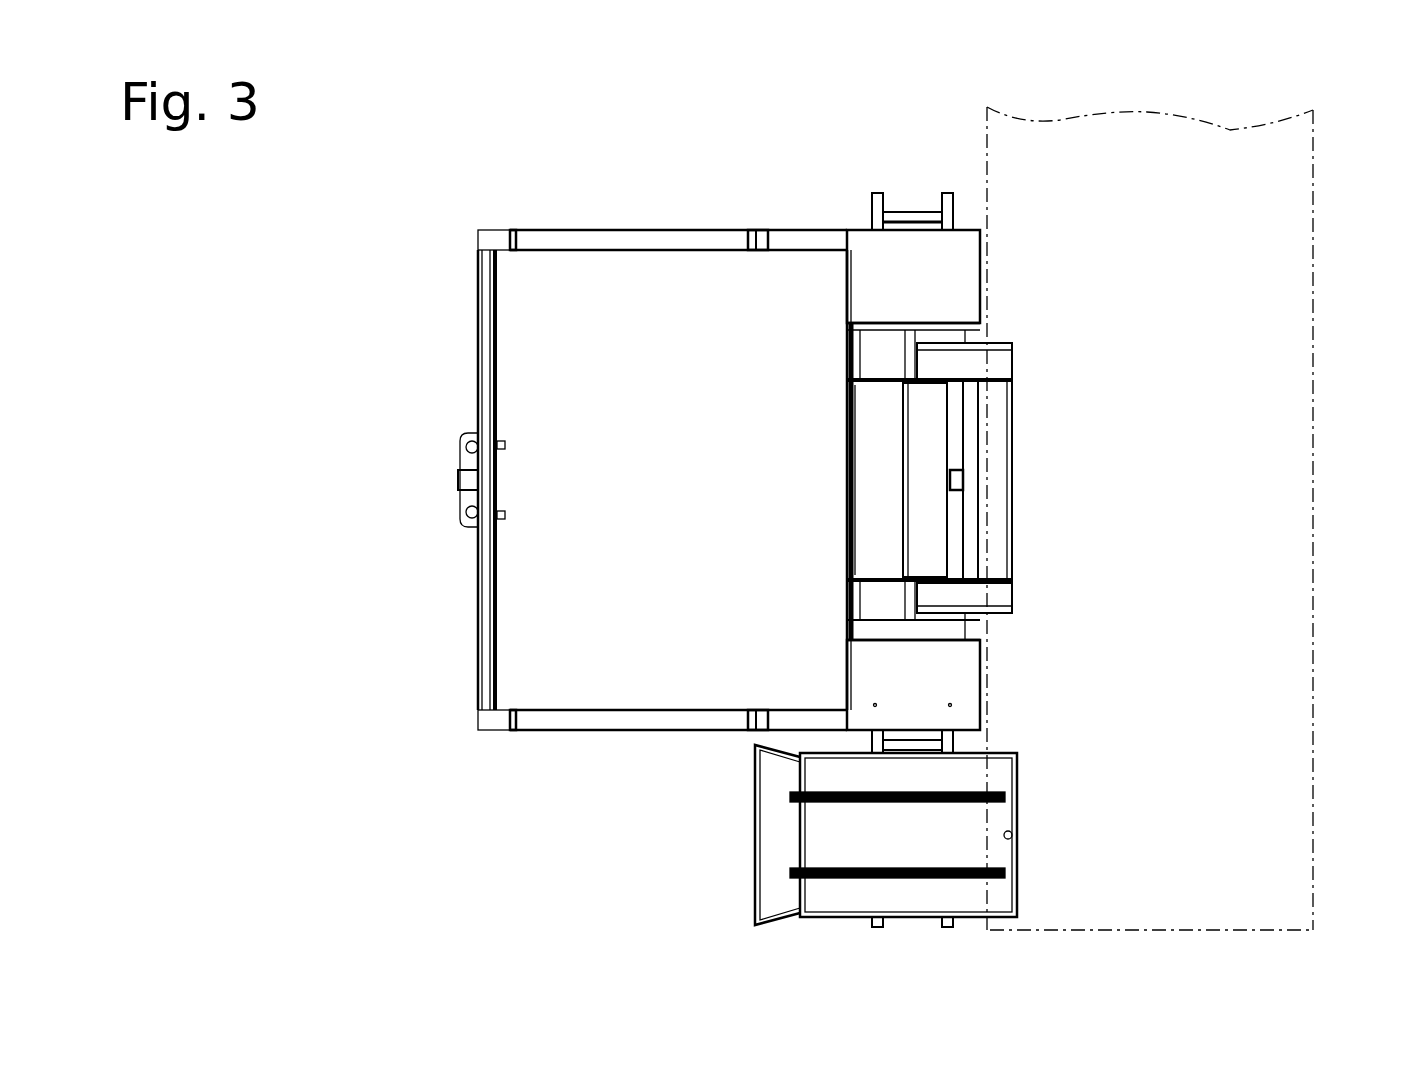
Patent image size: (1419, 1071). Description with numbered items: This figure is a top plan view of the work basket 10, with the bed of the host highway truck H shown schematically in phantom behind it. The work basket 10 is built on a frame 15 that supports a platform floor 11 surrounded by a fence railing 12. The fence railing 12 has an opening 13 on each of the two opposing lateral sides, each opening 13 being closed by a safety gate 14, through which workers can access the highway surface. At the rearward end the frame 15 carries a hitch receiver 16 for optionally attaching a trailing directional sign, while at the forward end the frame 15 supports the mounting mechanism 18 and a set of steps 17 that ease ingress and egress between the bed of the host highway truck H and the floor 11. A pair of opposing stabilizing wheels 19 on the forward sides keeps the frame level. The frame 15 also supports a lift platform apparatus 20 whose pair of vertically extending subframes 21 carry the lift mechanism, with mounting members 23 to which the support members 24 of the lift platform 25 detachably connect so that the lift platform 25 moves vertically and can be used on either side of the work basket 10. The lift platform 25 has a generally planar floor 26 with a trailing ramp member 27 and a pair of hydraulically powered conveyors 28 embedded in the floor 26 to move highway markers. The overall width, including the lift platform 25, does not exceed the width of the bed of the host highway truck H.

The work basket 10 is at (387, 748).
The platform floor 11 is at (583, 353).
The fence railing 12 is at (478, 394).
The opening 13 is at (627, 196).
The safety gate 14 is at (582, 240).
The frame 15 is at (986, 328).
The hitch receiver 16 is at (452, 480).
The steps 17 is at (890, 497).
The mounting mechanism 18 is at (1088, 432).
The stabilizing wheels 19 is at (913, 212).
The lift platform apparatus 20 is at (1113, 545).
The subframes 21 is at (963, 285).
The mounting members 23 is at (878, 192).
The support members 24 is at (880, 928).
The lift platform 25 is at (1000, 855).
The floor 26 is at (1010, 834).
The trailing ramp member 27 is at (762, 826).
The conveyors 28 is at (903, 805).
The host highway truck H is at (1240, 335).